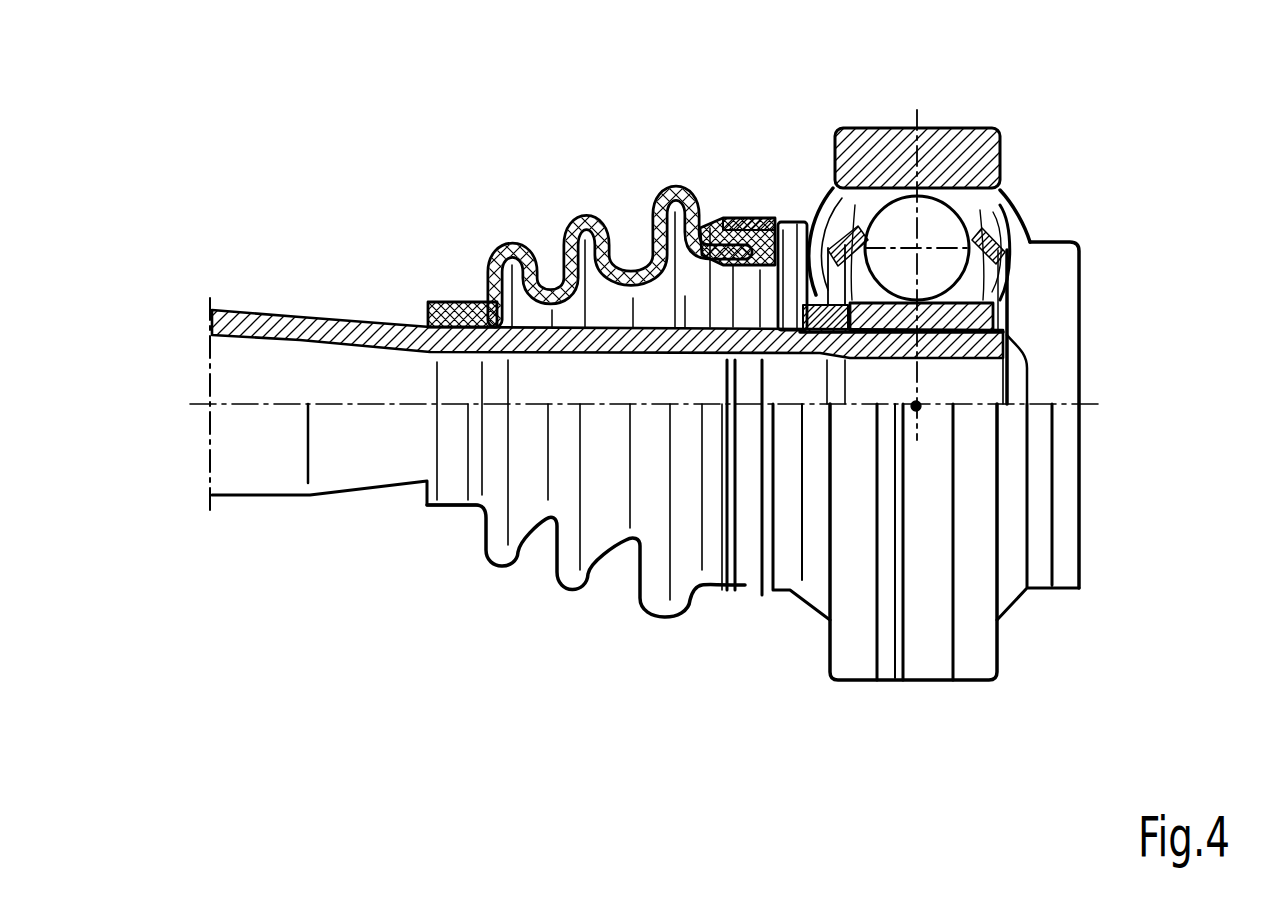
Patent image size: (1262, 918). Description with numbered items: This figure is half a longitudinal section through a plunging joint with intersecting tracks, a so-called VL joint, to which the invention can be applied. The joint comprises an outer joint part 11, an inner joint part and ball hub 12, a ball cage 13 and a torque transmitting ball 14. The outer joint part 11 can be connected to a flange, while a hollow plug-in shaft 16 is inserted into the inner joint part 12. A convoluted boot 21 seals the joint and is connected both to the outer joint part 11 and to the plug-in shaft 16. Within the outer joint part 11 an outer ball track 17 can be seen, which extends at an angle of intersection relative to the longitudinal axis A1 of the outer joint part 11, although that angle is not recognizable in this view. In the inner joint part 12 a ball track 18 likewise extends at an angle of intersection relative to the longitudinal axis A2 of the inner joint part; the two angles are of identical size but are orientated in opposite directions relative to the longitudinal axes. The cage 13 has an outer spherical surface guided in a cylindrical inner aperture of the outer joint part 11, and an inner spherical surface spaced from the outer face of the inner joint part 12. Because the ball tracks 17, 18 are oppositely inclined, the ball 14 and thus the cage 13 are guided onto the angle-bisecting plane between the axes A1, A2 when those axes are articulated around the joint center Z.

The outer joint part 11 is at (950, 145).
The inner joint part and ball hub 12 is at (1018, 233).
The ball cage 13 is at (1001, 200).
The torque transmitting ball 14 is at (902, 218).
The hollow plug-in shaft 16 is at (366, 331).
The outer ball track 17 is at (850, 205).
The ball track 18 is at (880, 197).
The convoluted boot 21 is at (660, 195).
The longitudinal axis of the outer joint part A1 is at (266, 404).
The longitudinal axis of the inner joint part A2 is at (1063, 410).
The joint center Z is at (918, 411).